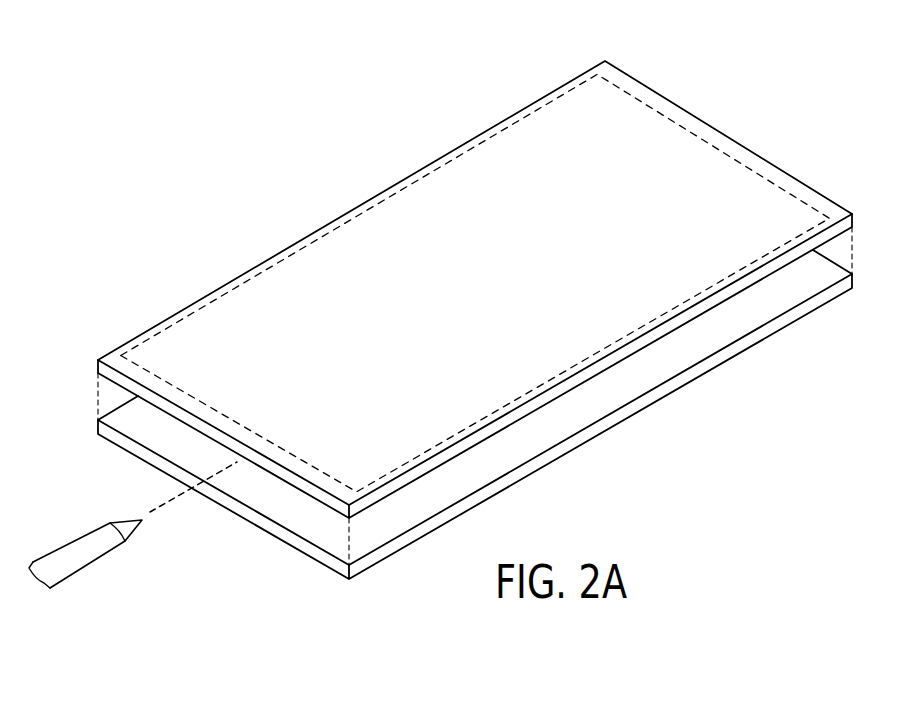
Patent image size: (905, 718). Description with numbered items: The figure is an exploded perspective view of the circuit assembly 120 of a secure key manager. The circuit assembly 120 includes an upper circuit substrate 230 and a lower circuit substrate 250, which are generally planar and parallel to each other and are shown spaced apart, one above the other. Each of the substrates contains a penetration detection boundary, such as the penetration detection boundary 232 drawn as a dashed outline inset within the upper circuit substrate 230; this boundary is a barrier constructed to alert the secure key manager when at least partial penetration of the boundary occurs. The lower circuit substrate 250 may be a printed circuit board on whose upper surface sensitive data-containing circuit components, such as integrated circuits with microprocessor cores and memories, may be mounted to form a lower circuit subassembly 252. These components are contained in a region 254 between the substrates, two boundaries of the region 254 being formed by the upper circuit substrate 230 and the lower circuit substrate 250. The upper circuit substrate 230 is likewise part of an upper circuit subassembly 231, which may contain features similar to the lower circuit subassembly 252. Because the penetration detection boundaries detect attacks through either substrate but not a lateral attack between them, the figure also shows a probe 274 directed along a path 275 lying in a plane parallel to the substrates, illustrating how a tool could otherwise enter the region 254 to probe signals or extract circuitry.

The circuit assembly 120 is at (692, 68).
The upper circuit substrate 230 is at (270, 257).
The upper circuit subassembly 231 is at (340, 216).
The penetration detection boundary 232 is at (437, 172).
The lower circuit substrate 250 is at (717, 367).
The lower circuit subassembly 252 is at (787, 328).
The region 254 is at (288, 502).
The probe 274 is at (70, 575).
The path 275 is at (167, 503).